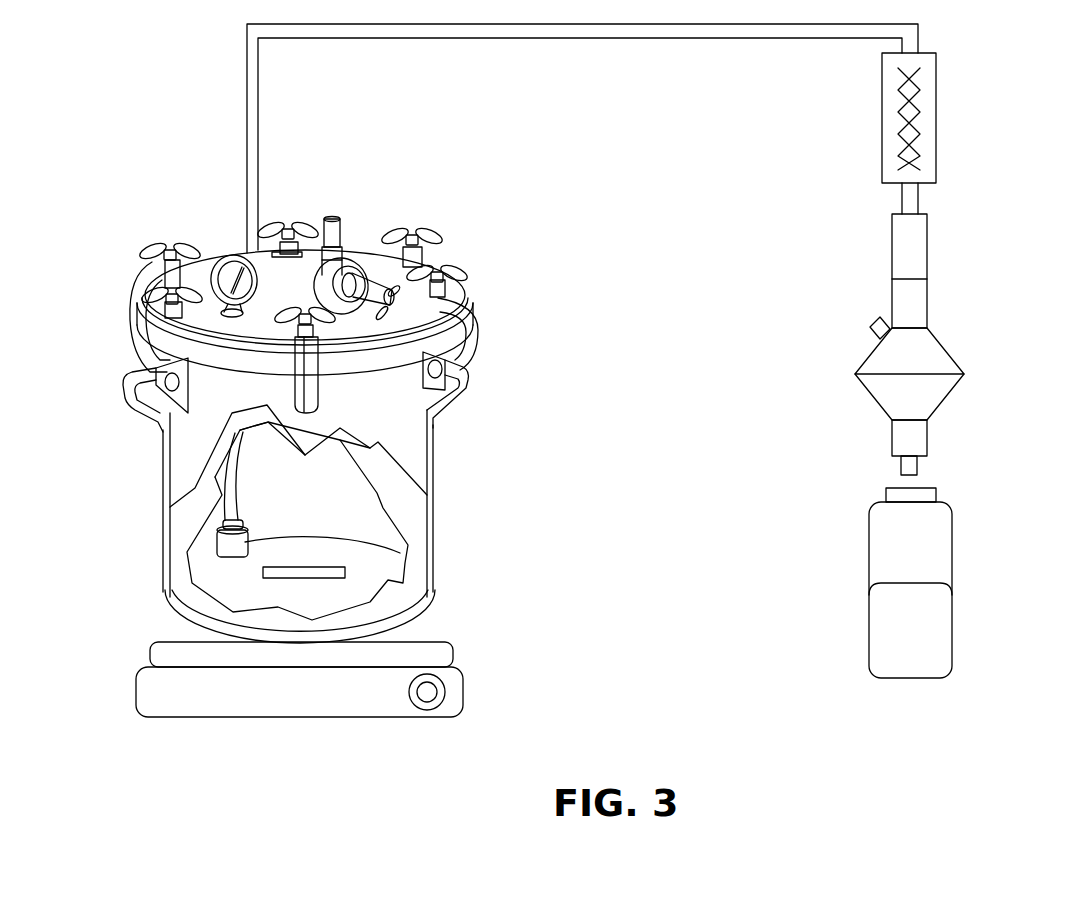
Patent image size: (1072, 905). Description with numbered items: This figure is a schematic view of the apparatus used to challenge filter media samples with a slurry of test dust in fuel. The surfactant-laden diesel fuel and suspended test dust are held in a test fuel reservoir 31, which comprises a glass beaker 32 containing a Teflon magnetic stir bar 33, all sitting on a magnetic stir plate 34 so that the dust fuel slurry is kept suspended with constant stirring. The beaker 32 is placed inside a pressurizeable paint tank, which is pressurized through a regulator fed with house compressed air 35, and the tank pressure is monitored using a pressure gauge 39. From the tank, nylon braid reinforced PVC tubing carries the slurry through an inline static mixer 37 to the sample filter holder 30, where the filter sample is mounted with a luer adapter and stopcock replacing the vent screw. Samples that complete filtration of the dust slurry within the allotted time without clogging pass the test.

The sample filter holder 30 is at (950, 353).
The test fuel reservoir 31 is at (330, 473).
The glass beaker 32 is at (410, 512).
The Teflon magnetic stir bar 33 is at (347, 573).
The magnetic stir plate 34 is at (465, 692).
The house compressed air 35 is at (330, 217).
The inline static mixer 37 is at (937, 147).
The pressure gauge 39 is at (212, 257).